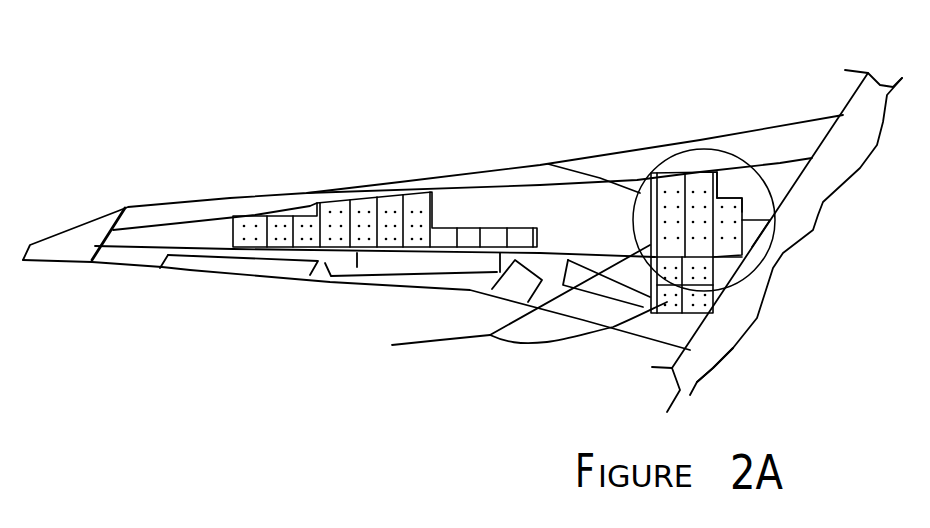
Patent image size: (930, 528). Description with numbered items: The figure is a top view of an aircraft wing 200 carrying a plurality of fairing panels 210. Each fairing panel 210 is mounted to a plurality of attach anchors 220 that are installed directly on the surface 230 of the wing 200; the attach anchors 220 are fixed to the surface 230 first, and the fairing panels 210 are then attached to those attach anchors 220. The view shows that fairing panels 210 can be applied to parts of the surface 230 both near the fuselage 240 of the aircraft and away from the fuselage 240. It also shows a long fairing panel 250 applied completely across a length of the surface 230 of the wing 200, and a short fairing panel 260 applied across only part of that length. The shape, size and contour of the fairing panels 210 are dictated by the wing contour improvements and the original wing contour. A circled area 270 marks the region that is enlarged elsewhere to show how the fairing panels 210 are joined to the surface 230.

The aircraft wing 200 is at (462, 225).
The fairing panels 210 is at (503, 309).
The attach anchors 220 is at (305, 207).
The surface 230 is at (527, 203).
The fuselage 240 is at (724, 370).
The long fairing panel 250 is at (673, 183).
The short fairing panel 260 is at (733, 213).
The circled area 270 is at (742, 195).